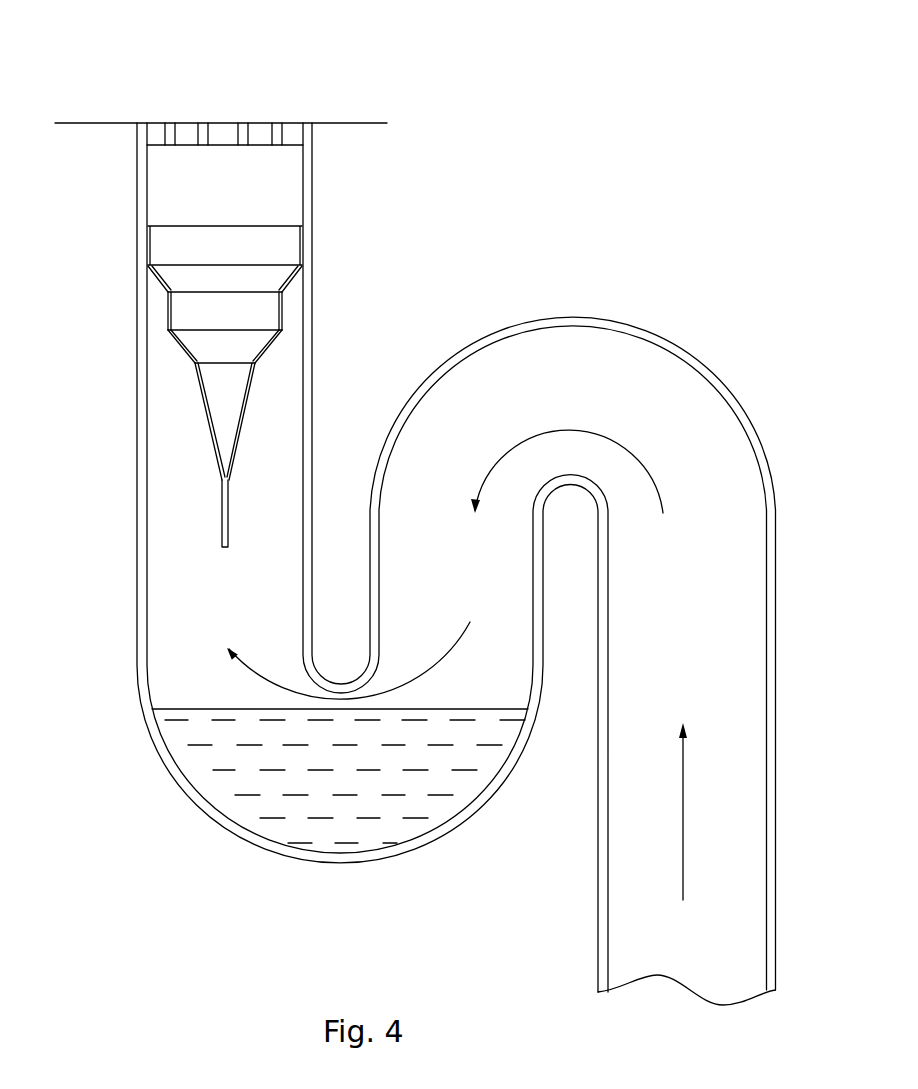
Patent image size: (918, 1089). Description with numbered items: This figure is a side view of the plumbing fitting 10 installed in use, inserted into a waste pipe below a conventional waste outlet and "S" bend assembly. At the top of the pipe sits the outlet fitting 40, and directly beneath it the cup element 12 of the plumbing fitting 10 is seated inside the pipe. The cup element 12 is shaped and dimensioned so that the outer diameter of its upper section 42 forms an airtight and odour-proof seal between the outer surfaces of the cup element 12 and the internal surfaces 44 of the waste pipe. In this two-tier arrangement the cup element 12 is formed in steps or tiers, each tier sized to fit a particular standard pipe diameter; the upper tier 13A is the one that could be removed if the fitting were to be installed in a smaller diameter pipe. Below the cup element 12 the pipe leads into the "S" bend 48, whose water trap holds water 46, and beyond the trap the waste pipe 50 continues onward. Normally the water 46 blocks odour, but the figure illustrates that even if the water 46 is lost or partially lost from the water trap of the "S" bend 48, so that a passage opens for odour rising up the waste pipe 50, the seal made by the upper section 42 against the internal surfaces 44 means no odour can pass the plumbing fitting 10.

The outlet fitting 40 is at (284, 84).
The internal surfaces of the waste pipe 44 is at (298, 193).
The upper tier 13A is at (128, 237).
The upper section 42 is at (311, 244).
The cup element 12 is at (296, 297).
The plumbing fitting 10 is at (229, 382).
The waste pipe 50 is at (775, 642).
The "S" bend 48 is at (177, 878).
The water 46 is at (308, 818).